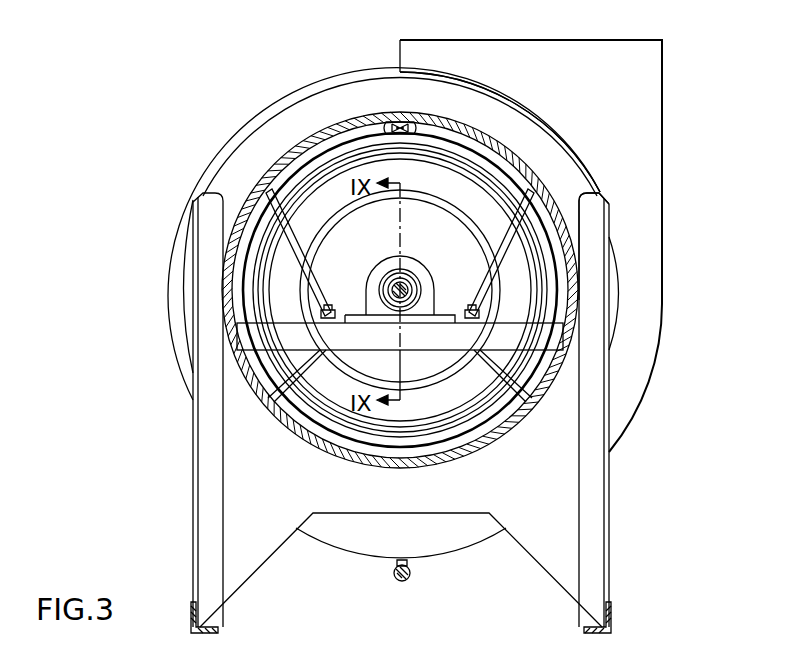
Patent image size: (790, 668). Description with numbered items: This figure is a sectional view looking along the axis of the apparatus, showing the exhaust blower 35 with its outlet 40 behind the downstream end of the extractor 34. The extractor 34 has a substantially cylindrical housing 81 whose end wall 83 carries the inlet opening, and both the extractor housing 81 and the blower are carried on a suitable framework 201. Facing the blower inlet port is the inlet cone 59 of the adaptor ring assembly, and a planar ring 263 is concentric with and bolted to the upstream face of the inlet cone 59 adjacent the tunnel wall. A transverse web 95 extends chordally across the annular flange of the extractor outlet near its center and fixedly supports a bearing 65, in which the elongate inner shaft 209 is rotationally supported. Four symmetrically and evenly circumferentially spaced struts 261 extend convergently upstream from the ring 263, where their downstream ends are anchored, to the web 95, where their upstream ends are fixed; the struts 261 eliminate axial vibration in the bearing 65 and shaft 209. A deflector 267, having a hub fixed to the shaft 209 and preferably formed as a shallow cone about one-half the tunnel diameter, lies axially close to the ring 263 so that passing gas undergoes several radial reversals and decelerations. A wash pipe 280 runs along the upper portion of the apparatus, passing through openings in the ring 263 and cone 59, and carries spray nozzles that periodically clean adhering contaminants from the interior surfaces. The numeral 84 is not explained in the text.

The exhaust blower 35 is at (672, 108).
The outlet 40 is at (535, 40).
The extractor 34 is at (520, 100).
The framework 201 is at (611, 569).
The end wall 83 is at (567, 180).
The housing rim 84 is at (570, 157).
The extractor housing 81 is at (543, 128).
The deflector 267 is at (287, 157).
The ring 263 is at (443, 137).
The inlet cone 59 is at (325, 205).
The wash pipe 280 is at (400, 113).
The transverse web 95 is at (533, 340).
The struts 261 is at (482, 282).
The bearing 65 is at (372, 310).
The inner shaft 209 is at (400, 280).